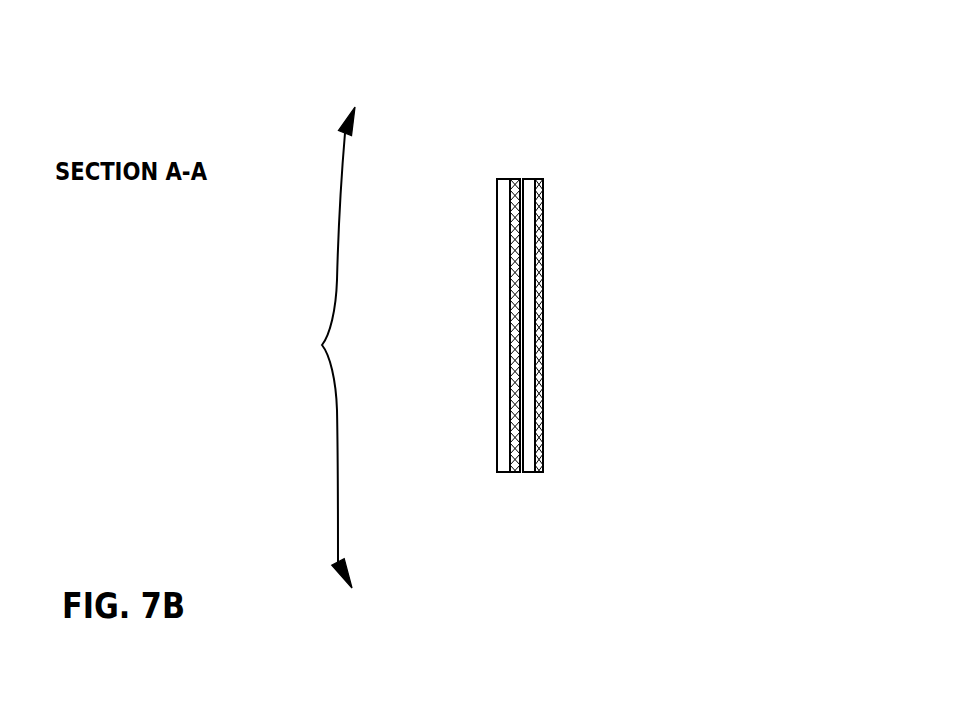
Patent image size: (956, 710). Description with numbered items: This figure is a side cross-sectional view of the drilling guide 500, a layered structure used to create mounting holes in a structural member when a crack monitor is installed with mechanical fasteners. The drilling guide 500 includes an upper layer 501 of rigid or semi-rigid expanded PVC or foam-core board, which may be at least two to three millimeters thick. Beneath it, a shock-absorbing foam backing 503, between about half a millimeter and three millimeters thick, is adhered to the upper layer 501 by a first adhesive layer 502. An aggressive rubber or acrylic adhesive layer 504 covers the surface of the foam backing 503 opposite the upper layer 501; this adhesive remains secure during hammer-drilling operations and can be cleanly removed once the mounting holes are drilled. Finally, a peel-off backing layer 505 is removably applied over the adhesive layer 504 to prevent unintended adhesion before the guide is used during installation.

The drilling guide 500 is at (313, 347).
The upper layer 501 is at (487, 305).
The first adhesive layer 502 is at (515, 484).
The shock-absorbing foam backing 503 is at (541, 366).
The adhesive layer 504 is at (539, 168).
The peel-off backing layer 505 is at (556, 302).